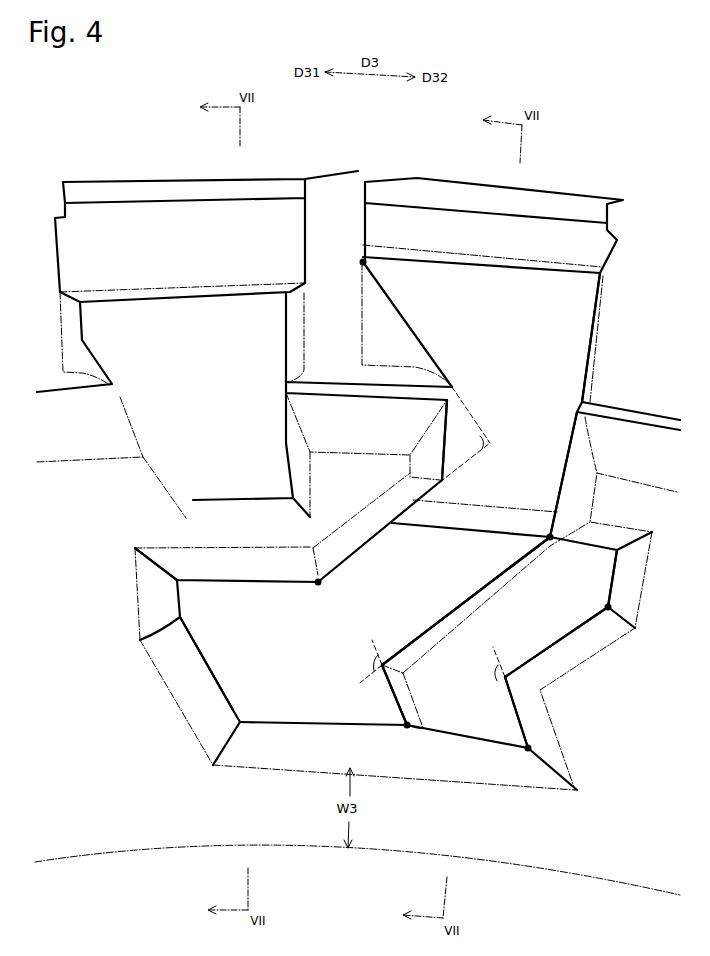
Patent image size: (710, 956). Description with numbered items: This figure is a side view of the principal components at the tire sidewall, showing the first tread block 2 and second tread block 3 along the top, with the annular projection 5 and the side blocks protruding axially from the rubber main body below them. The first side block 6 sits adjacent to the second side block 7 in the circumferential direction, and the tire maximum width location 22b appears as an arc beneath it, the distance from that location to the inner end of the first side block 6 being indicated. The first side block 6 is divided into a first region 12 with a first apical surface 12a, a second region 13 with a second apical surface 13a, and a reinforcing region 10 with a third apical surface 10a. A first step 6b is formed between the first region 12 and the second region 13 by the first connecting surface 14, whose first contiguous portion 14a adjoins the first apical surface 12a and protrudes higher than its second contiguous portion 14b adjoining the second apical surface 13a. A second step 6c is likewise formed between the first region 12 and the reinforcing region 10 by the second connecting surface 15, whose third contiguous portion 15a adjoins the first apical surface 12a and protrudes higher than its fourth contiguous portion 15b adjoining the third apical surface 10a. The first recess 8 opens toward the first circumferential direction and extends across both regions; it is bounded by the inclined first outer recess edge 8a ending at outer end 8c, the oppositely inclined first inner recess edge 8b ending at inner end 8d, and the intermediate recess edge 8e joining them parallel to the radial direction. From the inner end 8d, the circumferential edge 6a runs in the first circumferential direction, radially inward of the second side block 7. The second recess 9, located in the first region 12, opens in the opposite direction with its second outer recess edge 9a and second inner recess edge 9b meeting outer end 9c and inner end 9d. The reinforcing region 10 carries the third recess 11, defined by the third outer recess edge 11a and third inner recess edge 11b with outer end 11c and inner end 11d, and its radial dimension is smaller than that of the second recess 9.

The first tread block 2 is at (572, 200).
The second tread block 3 is at (130, 185).
The annular projection 5 is at (647, 413).
The first side block 6 is at (143, 704).
The circumferential edge 6a is at (193, 580).
The first step 6b is at (568, 527).
The second step 6c is at (422, 754).
The second side block 7 is at (187, 320).
The first recess 8 is at (394, 469).
The first outer recess edge 8a is at (407, 323).
The first inner recess edge 8b is at (352, 548).
The outer end of first recess 8c is at (353, 263).
The inner end of first recess 8d is at (323, 591).
The intermediate recess edge 8e is at (445, 428).
The second recess 9 is at (428, 678).
The second outer recess edge 9a is at (488, 597).
The second inner recess edge 9b is at (402, 707).
The outer end of second recess 9c is at (560, 538).
The inner end of second recess 9d is at (400, 734).
The reinforcing region 10 is at (488, 738).
The third apical surface 10a is at (589, 572).
The third recess 11 is at (562, 702).
The third outer recess edge 11a is at (562, 636).
The third inner recess edge 11b is at (523, 727).
The outer end of third recess 11c is at (593, 603).
The inner end of third recess 11d is at (523, 759).
The first region 12 is at (290, 720).
The first apical surface 12a is at (327, 641).
The second region 13 is at (483, 298).
The second apical surface 13a is at (533, 398).
The first connecting surface 14 is at (415, 513).
The first contiguous portion 14a is at (508, 530).
The second contiguous portion 14b is at (535, 510).
The second connecting surface 15 is at (443, 730).
The third contiguous portion 15a is at (502, 573).
The fourth contiguous portion 15b is at (445, 633).
The tire maximum width location 22b is at (78, 857).